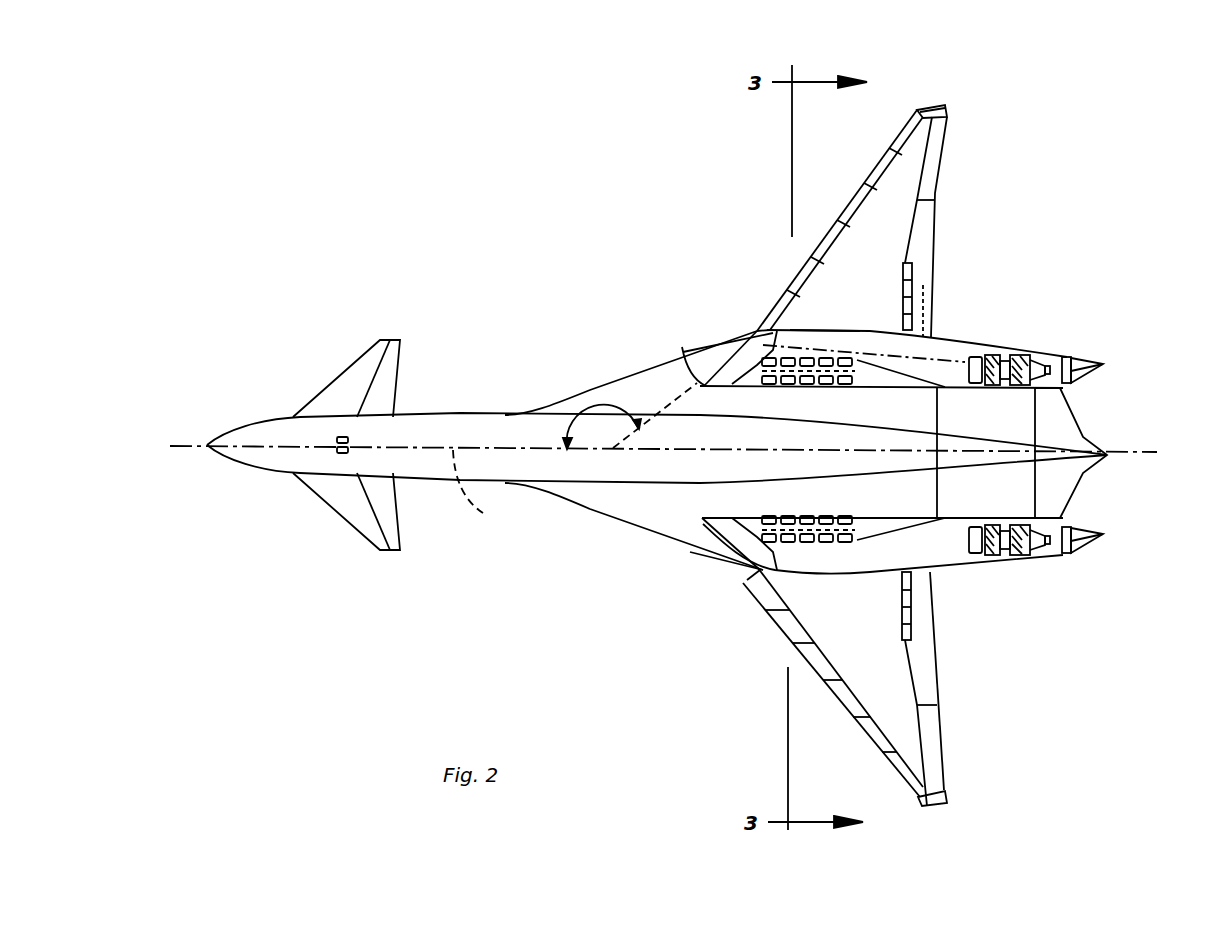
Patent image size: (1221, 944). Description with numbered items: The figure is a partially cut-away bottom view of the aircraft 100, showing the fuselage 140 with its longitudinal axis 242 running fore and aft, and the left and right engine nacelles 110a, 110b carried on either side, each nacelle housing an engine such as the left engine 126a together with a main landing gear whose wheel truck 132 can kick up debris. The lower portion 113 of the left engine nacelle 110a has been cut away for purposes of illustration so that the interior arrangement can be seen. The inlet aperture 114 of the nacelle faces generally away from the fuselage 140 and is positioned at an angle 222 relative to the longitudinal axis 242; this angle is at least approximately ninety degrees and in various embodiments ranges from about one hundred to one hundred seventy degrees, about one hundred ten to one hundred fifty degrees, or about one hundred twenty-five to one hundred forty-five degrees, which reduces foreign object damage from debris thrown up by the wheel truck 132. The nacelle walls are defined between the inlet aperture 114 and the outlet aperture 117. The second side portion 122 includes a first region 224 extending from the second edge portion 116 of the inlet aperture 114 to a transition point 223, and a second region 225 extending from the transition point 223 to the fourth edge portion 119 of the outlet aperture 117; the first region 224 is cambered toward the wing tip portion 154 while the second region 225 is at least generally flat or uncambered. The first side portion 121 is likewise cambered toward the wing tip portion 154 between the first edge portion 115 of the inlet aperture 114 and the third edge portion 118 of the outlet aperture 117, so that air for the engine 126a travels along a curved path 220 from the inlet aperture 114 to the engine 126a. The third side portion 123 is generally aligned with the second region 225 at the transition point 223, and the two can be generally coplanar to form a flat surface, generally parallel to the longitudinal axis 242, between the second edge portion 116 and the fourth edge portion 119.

The aircraft 100 is at (513, 285).
The fuselage 140 is at (258, 412).
The longitudinal axis 242 is at (483, 513).
The angle 222 is at (603, 407).
The second edge portion 116 is at (682, 350).
The inlet aperture 114 is at (723, 360).
The lower portion 113 is at (752, 326).
The first edge portion 115 is at (753, 327).
The left engine nacelle 110a is at (908, 256).
The right engine nacelle 110b is at (853, 573).
The wing tip portion 154 is at (948, 105).
The first side portion 121 is at (820, 327).
The first region 224 is at (858, 342).
The curved path 220 is at (927, 270).
The second side portion 122 is at (952, 387).
The left engine 126a is at (1017, 357).
The third edge portion 118 is at (1073, 355).
The outlet aperture 117 is at (1100, 373).
The fourth edge portion 119 is at (1077, 390).
The third side portion 123 is at (893, 390).
The transition point 223 is at (1007, 390).
The second region 225 is at (1005, 390).
The wheel truck 132 is at (830, 385).